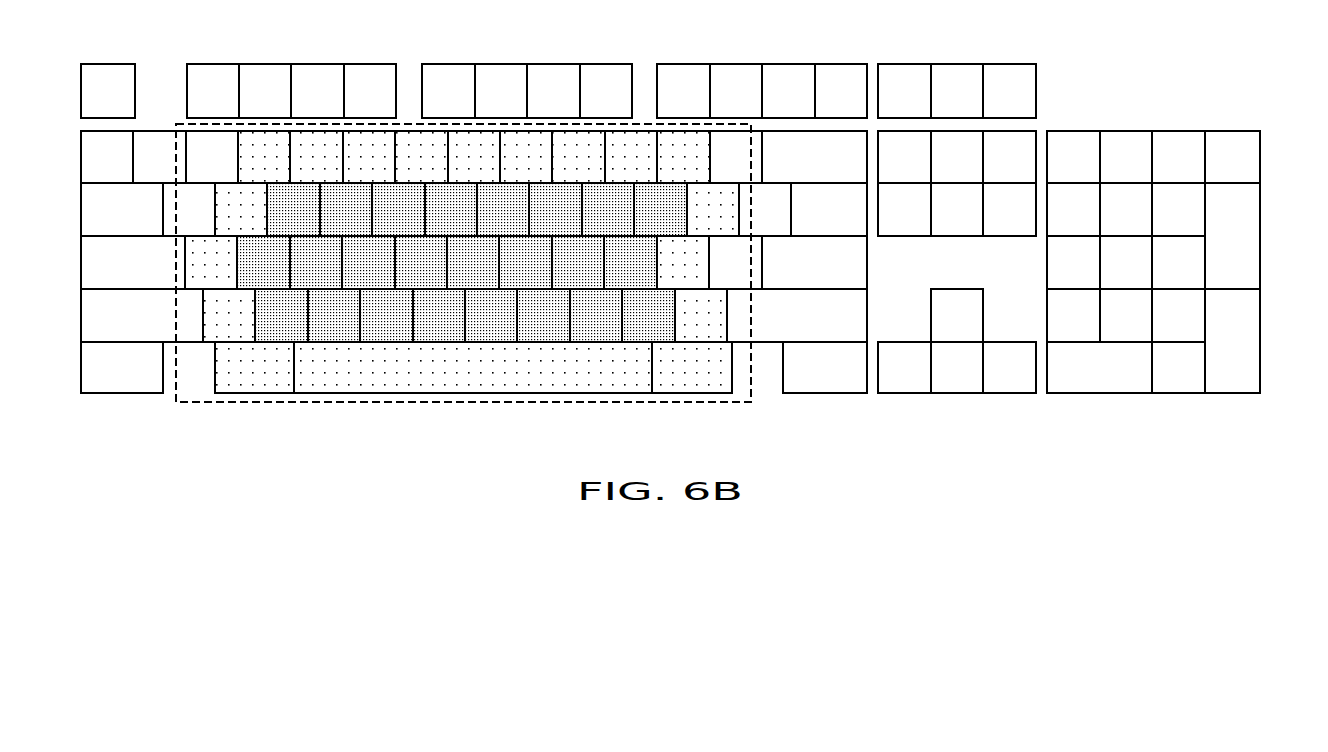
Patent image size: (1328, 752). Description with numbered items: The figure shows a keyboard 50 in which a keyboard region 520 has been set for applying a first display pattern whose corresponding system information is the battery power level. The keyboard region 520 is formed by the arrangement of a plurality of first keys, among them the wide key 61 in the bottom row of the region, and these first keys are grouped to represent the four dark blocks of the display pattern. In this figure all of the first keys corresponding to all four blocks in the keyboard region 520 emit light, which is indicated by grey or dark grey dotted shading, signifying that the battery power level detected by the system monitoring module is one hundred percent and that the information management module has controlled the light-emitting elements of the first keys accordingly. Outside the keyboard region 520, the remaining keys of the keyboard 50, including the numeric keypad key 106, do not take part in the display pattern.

The keyboard 50 is at (700, 258).
The keyboard region 520 is at (285, 403).
The key 61 is at (473, 367).
The numpad key 106 is at (1232, 288).